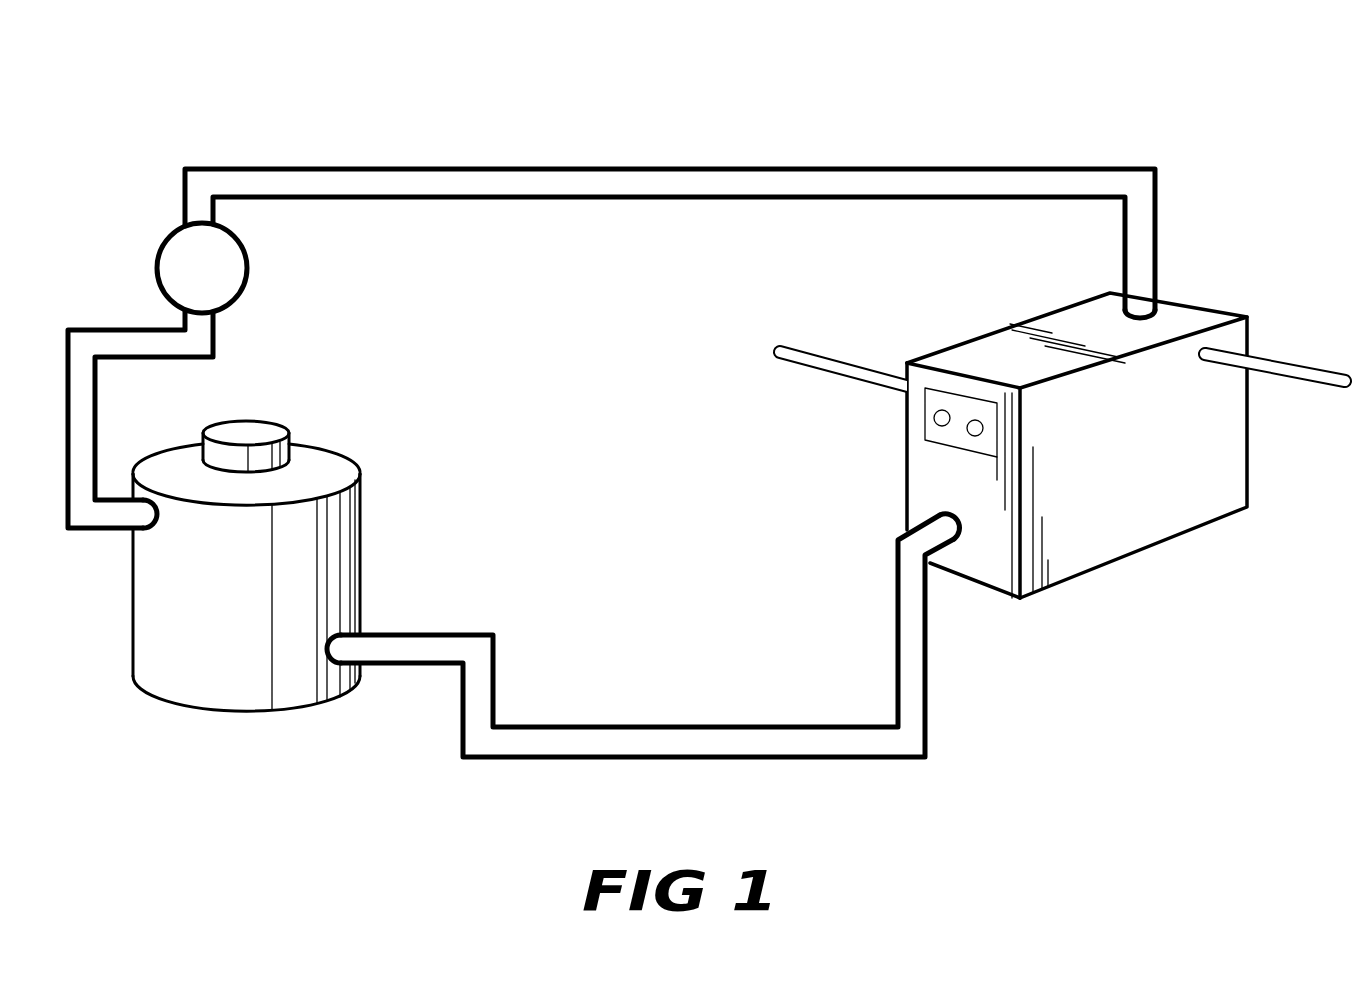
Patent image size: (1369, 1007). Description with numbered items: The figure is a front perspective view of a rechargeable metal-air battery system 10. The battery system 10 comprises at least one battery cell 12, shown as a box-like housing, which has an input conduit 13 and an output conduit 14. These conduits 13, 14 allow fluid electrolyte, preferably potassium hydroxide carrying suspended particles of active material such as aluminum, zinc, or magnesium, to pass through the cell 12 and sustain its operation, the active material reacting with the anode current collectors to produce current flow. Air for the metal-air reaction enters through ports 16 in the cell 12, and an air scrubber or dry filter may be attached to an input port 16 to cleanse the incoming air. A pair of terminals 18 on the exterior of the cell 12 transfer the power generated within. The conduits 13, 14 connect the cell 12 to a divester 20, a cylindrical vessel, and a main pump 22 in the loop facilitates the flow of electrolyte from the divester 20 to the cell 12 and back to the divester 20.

The battery system 10 is at (1093, 121).
The battery cell 12 is at (1147, 522).
The input conduit 13 is at (653, 185).
The output conduit 14 is at (712, 743).
The ports 16 is at (798, 355).
The terminals 18 is at (953, 435).
The divester 20 is at (327, 525).
The main pump 22 is at (207, 268).